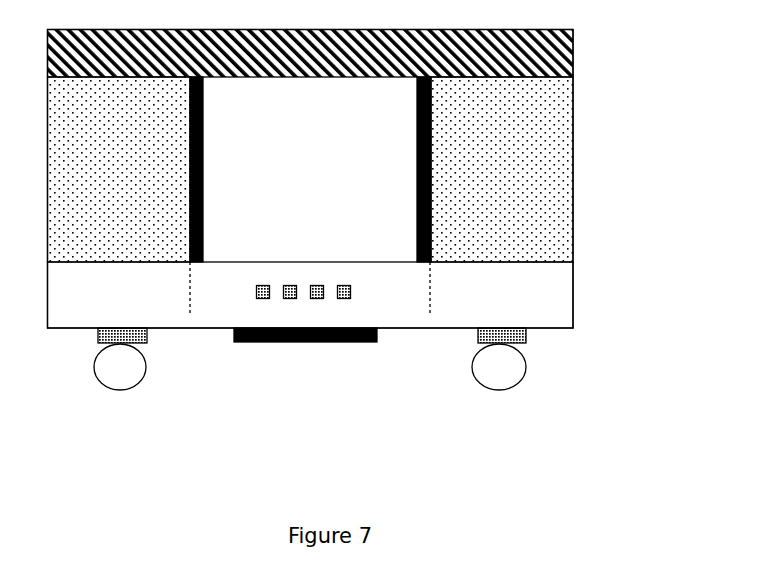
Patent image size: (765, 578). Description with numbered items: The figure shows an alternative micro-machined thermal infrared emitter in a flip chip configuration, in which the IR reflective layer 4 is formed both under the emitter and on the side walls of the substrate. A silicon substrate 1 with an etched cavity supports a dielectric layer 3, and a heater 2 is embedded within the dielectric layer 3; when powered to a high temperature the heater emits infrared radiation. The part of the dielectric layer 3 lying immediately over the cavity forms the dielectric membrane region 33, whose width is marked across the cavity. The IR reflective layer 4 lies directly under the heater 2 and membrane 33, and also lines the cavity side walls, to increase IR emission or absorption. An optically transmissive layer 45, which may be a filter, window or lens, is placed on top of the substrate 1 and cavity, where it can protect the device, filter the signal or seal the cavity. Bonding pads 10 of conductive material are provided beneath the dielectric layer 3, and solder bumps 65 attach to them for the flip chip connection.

The optically transmissive layer 45 is at (543, 43).
The semiconductor substrate 1 is at (543, 157).
The IR reflective layer 4 is at (412, 173).
The dielectric layer 3 is at (551, 289).
The heater 2 is at (321, 281).
The dielectric membrane region 33 is at (429, 308).
The bonding pads 10 is at (536, 342).
The solder bumps 65 is at (538, 370).